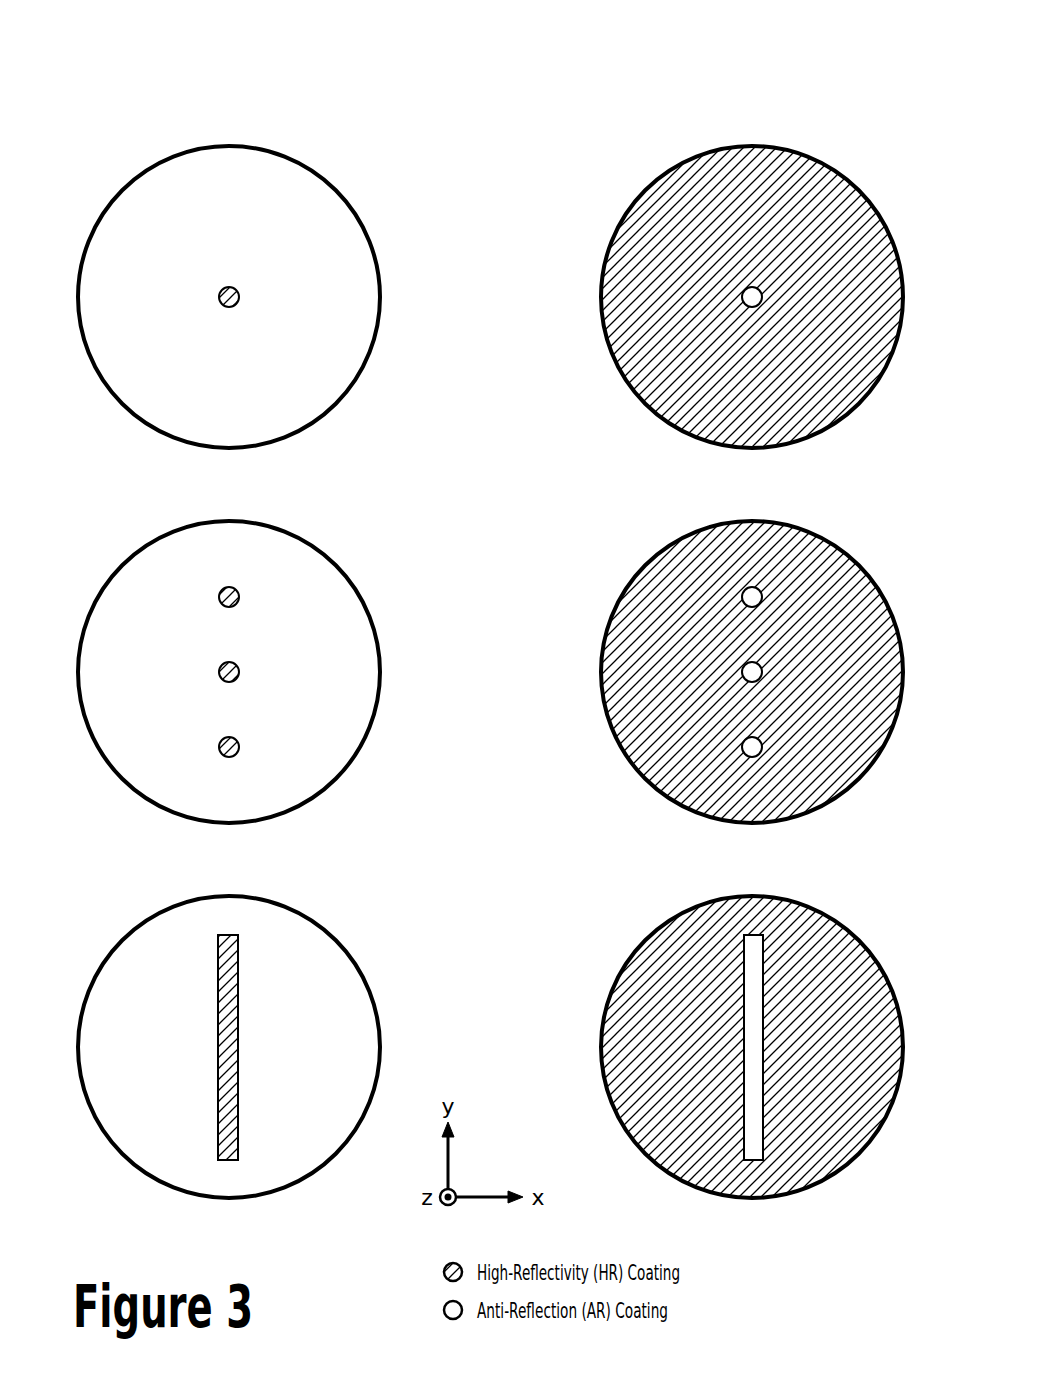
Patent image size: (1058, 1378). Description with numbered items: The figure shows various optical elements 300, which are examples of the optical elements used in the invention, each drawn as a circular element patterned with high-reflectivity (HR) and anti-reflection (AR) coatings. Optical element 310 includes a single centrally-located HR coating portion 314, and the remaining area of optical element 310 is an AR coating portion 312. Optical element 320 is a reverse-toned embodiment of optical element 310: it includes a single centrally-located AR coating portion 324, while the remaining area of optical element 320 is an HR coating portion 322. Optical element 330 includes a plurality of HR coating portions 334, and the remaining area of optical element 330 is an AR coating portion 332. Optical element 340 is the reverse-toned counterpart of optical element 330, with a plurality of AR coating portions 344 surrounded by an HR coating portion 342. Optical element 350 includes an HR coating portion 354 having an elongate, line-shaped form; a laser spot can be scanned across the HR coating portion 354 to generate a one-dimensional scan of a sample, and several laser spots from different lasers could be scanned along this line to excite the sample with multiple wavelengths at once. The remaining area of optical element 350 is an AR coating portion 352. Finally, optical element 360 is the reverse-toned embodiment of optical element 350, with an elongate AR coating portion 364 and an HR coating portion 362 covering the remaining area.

The various optical elements 300 is at (687, 90).
The optical element 310 is at (306, 148).
The AR coating portion 312 is at (325, 182).
The HR coating portion 314 is at (238, 292).
The optical element 320 is at (813, 145).
The HR coating portion 322 is at (668, 173).
The AR coating portion 324 is at (744, 293).
The optical element 330 is at (300, 530).
The AR coating portion 332 is at (347, 573).
The HR coating portions 334 is at (238, 598).
The optical element 340 is at (856, 548).
The HR coating portion 342 is at (662, 552).
The AR coating portions 344 is at (743, 597).
The optical element 350 is at (289, 893).
The AR coating portion 352 is at (323, 928).
The HR coating portion 354 is at (238, 1000).
The optical element 360 is at (846, 912).
The HR coating portion 362 is at (668, 920).
The AR coating portion 364 is at (743, 988).